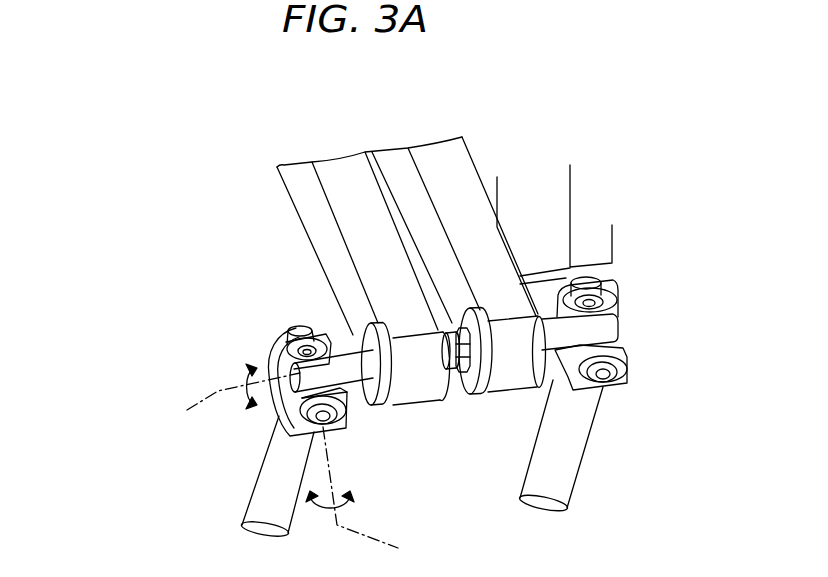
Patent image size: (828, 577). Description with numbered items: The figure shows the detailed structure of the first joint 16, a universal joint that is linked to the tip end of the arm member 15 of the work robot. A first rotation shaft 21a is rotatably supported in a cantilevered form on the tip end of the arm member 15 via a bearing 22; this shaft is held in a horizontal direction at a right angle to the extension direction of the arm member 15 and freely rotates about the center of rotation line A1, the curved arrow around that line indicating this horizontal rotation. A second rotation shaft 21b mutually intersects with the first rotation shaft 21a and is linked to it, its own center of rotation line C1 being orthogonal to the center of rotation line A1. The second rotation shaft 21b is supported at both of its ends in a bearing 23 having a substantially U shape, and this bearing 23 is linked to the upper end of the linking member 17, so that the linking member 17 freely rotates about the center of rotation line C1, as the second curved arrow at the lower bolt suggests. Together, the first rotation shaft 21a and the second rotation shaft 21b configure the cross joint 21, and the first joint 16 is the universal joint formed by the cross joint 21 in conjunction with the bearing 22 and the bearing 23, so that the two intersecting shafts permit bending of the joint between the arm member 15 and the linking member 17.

The arm member 15 is at (407, 201).
The first joint 16 is at (263, 188).
The linking member 17 is at (268, 492).
The cross joint 21 is at (250, 233).
The first rotation shaft 21a is at (345, 357).
The second rotation shaft 21b is at (288, 340).
The bearing 22 is at (358, 345).
The bearing 23 is at (270, 365).
The center of rotation line A1 is at (227, 395).
The center of rotation line C1 is at (369, 496).